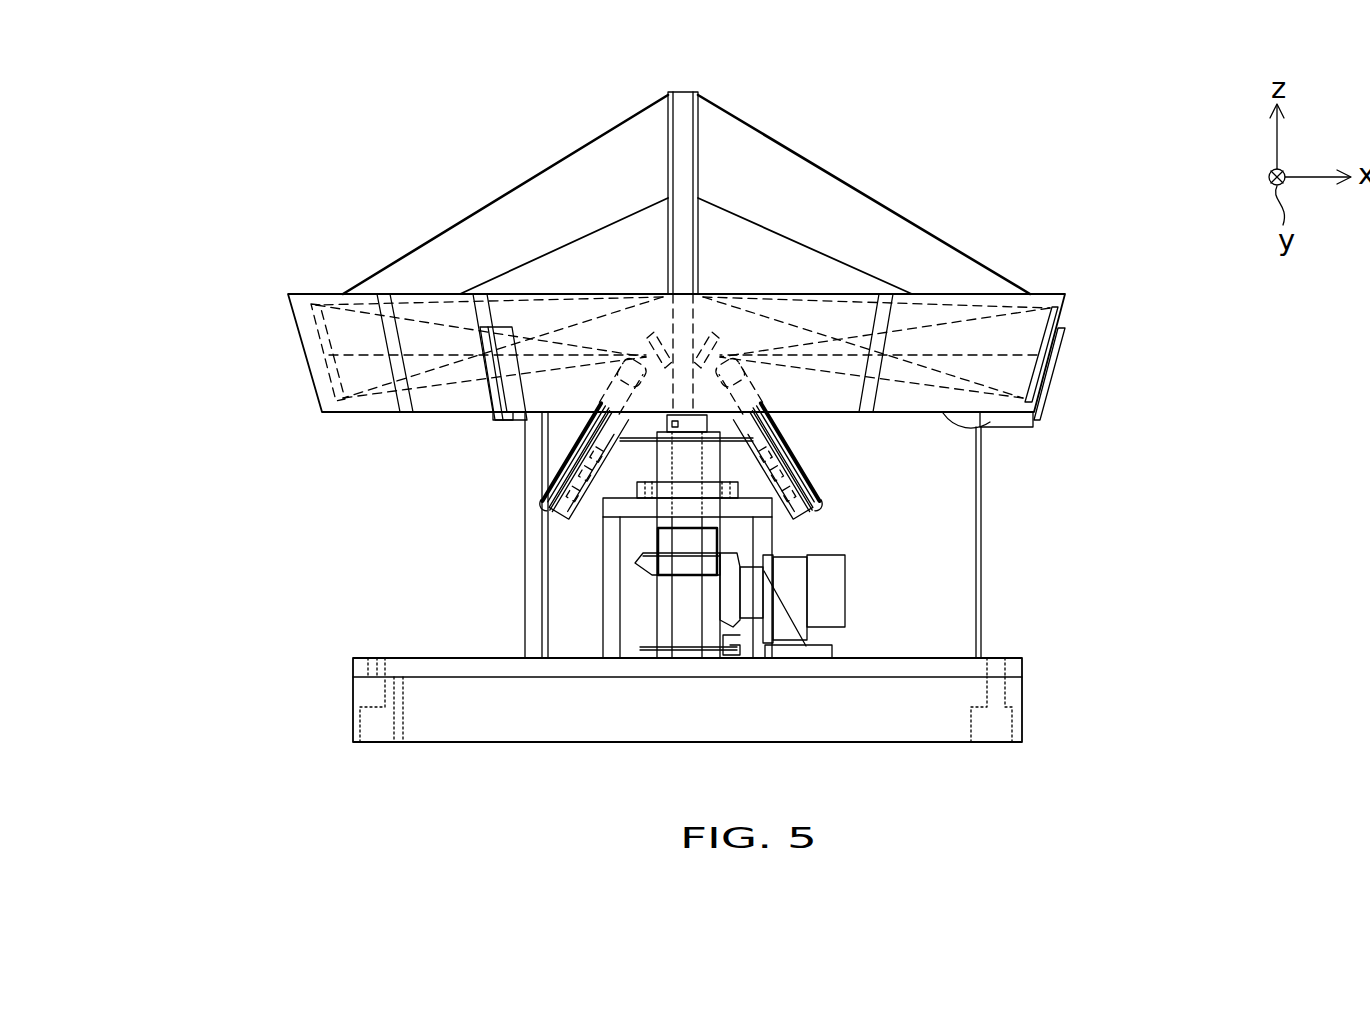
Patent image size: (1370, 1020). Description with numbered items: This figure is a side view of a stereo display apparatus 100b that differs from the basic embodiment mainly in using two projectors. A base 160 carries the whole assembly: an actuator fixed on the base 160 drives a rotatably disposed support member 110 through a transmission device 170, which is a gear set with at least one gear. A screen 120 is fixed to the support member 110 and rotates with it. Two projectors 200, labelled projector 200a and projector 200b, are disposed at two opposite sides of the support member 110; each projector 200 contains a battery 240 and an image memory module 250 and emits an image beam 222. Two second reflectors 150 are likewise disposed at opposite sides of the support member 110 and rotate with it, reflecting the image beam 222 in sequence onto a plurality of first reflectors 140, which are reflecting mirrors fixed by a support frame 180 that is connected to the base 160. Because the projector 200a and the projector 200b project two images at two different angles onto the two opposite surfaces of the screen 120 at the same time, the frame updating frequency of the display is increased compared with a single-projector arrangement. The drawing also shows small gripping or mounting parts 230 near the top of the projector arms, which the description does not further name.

The stereo display apparatus 100b is at (1158, 787).
The support member 110 is at (675, 430).
The screen 120 is at (682, 100).
The first reflectors 140 is at (1049, 303).
The second reflector 150 is at (652, 318).
The base 160 is at (913, 728).
The transmission device 170 is at (658, 567).
The support frame 180 is at (942, 413).
The projector 200 is at (681, 437).
The projector 200a is at (765, 428).
The projector 200b is at (560, 442).
The image beam 222 is at (486, 207).
The gripper 230 is at (628, 385).
The battery 240 is at (556, 518).
The image memory module 250 is at (558, 458).